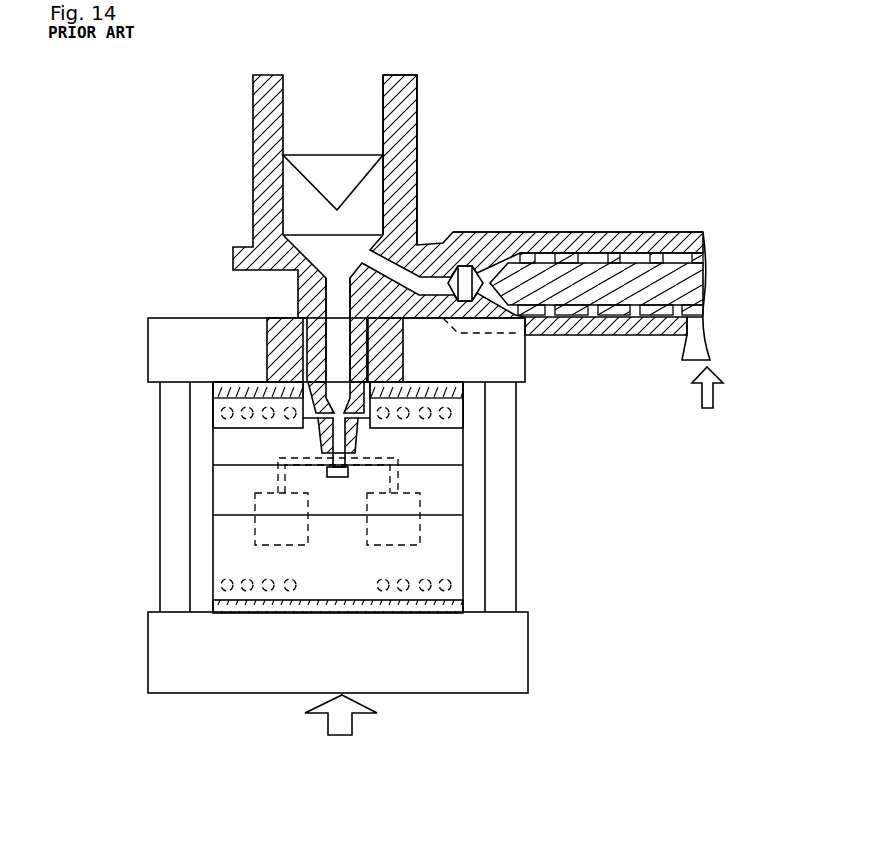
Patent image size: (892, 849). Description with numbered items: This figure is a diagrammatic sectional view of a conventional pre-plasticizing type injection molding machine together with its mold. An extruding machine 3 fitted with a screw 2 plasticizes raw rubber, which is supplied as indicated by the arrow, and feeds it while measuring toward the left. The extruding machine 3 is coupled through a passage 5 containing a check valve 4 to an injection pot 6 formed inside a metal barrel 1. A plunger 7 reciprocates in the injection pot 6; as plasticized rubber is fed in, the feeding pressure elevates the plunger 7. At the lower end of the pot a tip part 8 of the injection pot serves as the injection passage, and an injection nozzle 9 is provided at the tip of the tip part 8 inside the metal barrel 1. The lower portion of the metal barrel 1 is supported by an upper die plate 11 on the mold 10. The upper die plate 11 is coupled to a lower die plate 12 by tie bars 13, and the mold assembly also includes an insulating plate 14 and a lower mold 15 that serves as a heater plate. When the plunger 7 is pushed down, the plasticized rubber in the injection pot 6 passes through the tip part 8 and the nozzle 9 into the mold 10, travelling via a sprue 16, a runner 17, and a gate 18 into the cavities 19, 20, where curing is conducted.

The metal barrel 1 is at (262, 189).
The screw 2 is at (706, 276).
The extruding machine 3 is at (695, 231).
The check valve 4 is at (484, 298).
The passage 5 is at (428, 243).
The injection pot 6 is at (393, 190).
The plunger 7 is at (333, 160).
The tip part of the injection pot 8 is at (337, 305).
The injection nozzle 9 is at (291, 372).
The mold 10 is at (210, 502).
The upper die plate 11 is at (168, 353).
The lower die plate 12 is at (160, 661).
The tie bars 13 is at (510, 410).
The insulating plate 14 is at (210, 393).
The lower mold 15 is at (218, 567).
The sprue 16 is at (320, 448).
The runner 17 is at (392, 456).
The gate 18 is at (400, 478).
The cavity 19 is at (255, 535).
The cavity 20 is at (420, 540).